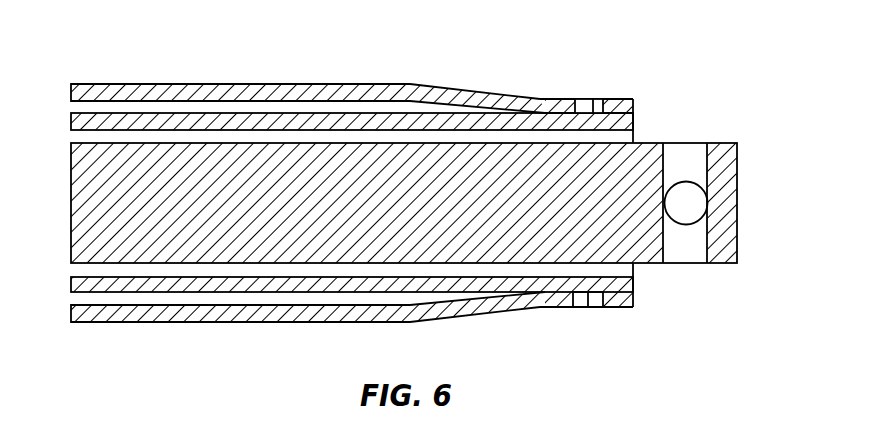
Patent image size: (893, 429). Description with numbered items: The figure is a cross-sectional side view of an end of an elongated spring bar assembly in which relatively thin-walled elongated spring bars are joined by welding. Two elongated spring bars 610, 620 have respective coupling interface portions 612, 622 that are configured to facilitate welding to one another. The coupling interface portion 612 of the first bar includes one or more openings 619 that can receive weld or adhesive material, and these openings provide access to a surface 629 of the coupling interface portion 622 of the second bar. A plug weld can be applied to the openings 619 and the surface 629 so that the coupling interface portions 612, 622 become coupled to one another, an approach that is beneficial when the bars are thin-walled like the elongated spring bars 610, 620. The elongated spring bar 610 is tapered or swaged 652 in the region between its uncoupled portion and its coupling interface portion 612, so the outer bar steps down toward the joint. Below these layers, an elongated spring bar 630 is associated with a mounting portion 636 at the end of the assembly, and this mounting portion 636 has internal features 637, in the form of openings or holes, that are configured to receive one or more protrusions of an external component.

The elongated spring bar 610 is at (178, 88).
The elongated spring bar 620 is at (240, 123).
The elongated spring bar 630 is at (317, 172).
The tapered or swaged portion 652 is at (485, 100).
The coupling interface portion 612 is at (616, 88).
The coupling interface portion 622 is at (635, 120).
The openings 619 is at (581, 97).
The surface 629 is at (593, 113).
The mounting portion 636 is at (719, 116).
The internal features 637 is at (695, 209).